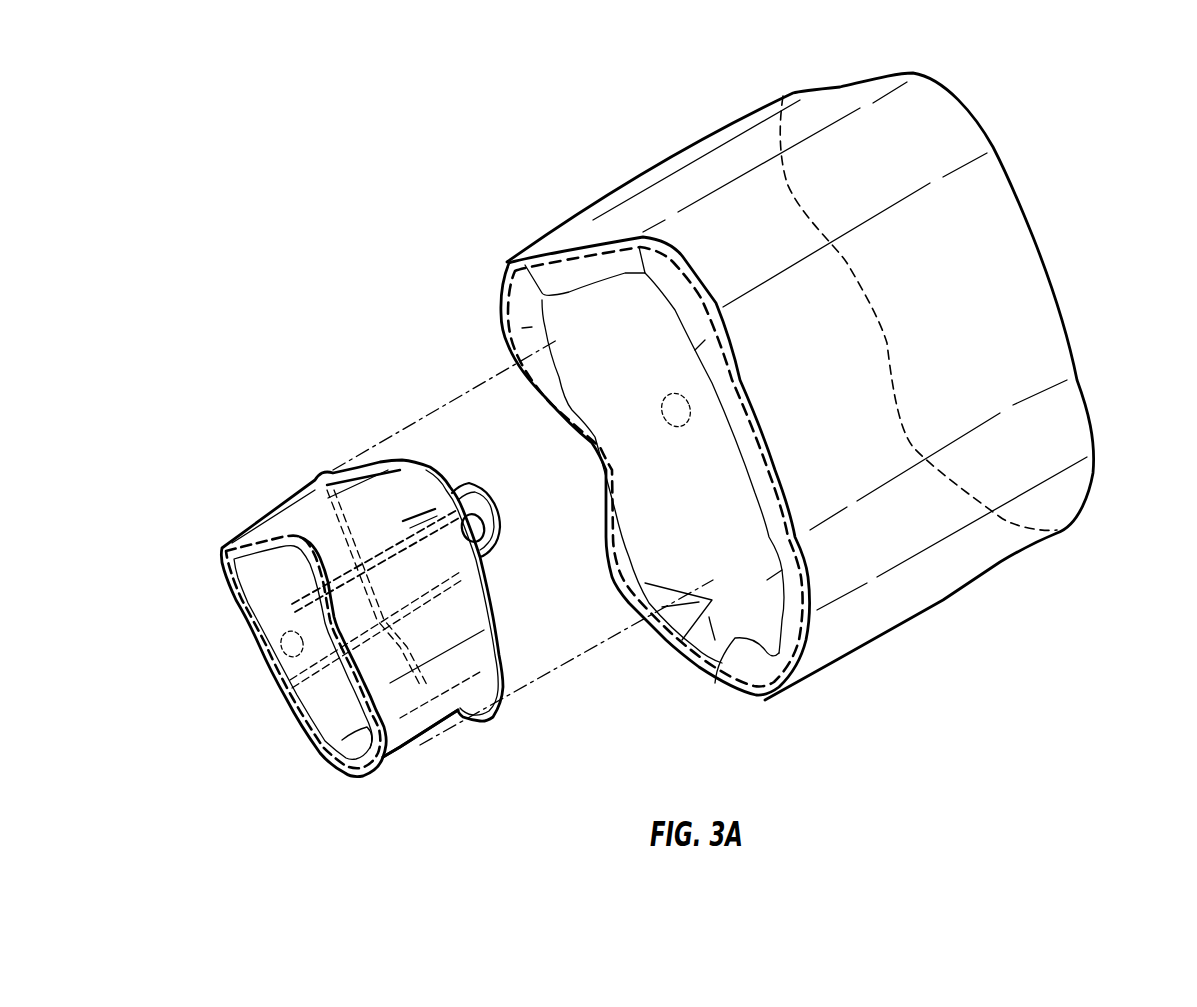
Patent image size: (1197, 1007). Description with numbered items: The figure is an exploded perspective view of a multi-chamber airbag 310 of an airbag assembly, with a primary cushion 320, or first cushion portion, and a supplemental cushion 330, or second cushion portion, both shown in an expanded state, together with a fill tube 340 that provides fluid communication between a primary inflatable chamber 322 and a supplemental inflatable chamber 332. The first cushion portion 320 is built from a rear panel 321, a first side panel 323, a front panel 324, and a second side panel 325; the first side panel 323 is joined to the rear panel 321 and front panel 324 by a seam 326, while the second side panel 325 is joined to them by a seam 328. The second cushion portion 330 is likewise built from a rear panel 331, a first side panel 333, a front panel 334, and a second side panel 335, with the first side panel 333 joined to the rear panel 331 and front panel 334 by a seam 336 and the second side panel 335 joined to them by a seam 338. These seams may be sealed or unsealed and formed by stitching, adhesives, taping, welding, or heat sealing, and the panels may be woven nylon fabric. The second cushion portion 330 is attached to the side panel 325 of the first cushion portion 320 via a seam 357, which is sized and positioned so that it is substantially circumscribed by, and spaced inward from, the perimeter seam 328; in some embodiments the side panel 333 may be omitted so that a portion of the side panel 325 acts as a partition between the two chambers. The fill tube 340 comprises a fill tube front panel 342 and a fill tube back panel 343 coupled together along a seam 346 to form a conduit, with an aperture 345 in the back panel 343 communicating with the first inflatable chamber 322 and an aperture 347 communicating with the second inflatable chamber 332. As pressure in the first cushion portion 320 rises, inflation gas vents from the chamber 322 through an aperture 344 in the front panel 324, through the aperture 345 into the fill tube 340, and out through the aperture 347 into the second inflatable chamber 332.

The multi-chamber airbag 310 is at (541, 181).
The primary cushion 320 is at (1041, 237).
The rear panel 321 is at (1063, 353).
The primary inflatable chamber 322 is at (1028, 503).
The first side panel 323 is at (1088, 380).
The front panel 324 is at (690, 643).
The second side panel 325 is at (722, 645).
The seam 326 is at (1094, 414).
The seam 328 is at (807, 645).
The supplemental cushion 330 is at (258, 667).
The rear panel 331 is at (486, 642).
The supplemental inflatable chamber 332 is at (322, 718).
The first side panel 333 is at (470, 596).
The front panel 334 is at (320, 710).
The second side panel 335 is at (352, 775).
The seam 336 is at (502, 700).
The seam 338 is at (380, 745).
The fill tube 340 is at (453, 488).
The fill tube front panel 342 is at (447, 497).
The fill tube back panel 343 is at (484, 560).
The aperture 344 is at (690, 413).
The aperture 345 is at (485, 522).
The seam 346 is at (472, 490).
The aperture 347 is at (277, 646).
The seam 357 is at (505, 657).